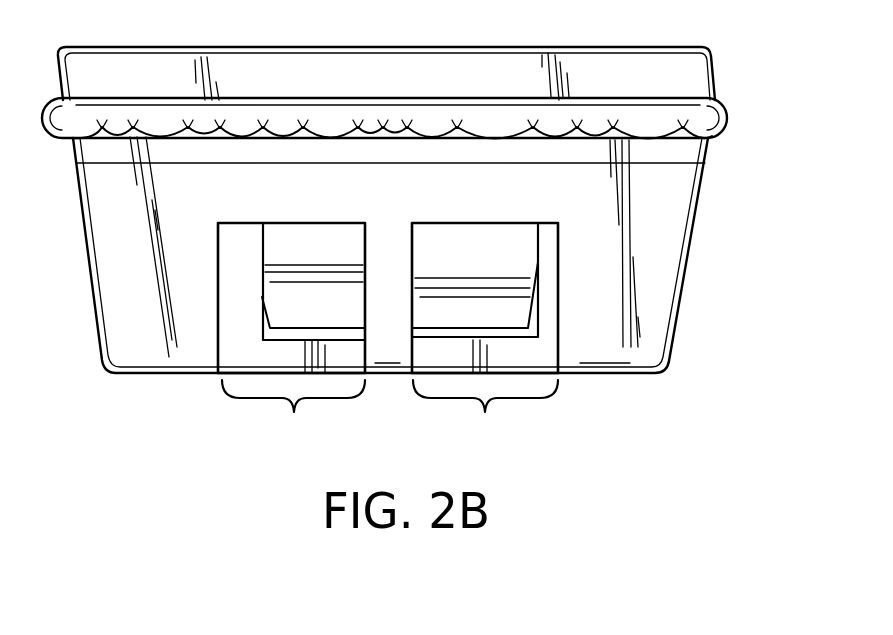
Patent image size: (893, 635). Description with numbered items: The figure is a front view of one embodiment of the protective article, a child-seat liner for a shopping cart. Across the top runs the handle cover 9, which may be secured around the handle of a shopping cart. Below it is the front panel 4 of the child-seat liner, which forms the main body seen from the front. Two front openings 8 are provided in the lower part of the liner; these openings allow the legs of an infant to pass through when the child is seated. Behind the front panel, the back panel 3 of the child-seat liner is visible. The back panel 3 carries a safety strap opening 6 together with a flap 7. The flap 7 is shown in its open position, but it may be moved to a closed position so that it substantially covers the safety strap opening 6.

The back panel 3 is at (232, 337).
The front panel 4 is at (667, 302).
The safety strap opening 6 is at (438, 334).
The flap 7 is at (517, 310).
The front openings 8 is at (390, 416).
The handle cover 9 is at (728, 110).